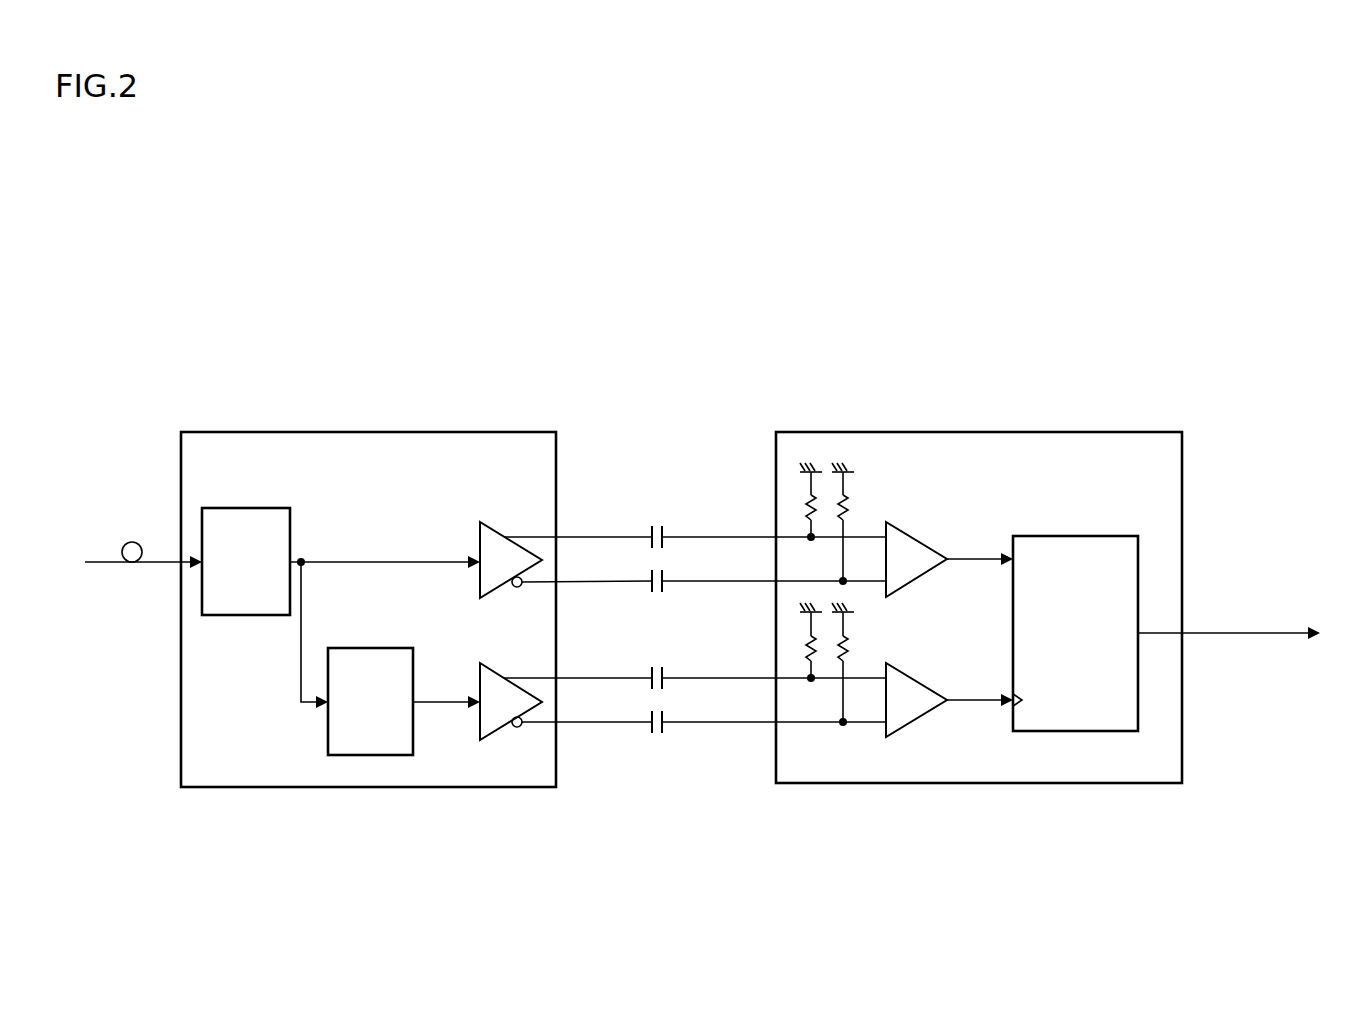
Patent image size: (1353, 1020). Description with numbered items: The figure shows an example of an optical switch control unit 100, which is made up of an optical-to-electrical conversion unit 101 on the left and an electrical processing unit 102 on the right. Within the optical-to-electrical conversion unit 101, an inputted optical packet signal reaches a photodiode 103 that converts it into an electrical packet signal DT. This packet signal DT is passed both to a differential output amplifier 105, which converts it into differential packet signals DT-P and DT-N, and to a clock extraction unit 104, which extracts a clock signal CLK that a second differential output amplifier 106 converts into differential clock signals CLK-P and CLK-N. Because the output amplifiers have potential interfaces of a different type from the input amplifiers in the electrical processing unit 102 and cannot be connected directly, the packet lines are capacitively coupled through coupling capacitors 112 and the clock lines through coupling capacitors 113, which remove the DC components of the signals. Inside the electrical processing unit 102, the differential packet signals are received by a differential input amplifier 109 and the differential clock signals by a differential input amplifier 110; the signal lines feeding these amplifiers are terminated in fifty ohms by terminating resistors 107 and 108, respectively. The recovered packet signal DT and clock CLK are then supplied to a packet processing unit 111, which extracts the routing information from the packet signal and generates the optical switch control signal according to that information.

The optical switch control unit 100 is at (694, 385).
The optical-to-electrical (O/E) conversion unit 101 is at (380, 432).
The electrical processing unit 102 is at (990, 432).
The photodiode (PD) 103 is at (225, 508).
The clock extraction unit 104 is at (375, 648).
The differential output amplifier 105 is at (487, 526).
The differential output amplifier 106 is at (497, 672).
The terminating resistors 107 is at (846, 498).
The terminating resistors 108 is at (846, 641).
The differential input amplifier 109 is at (913, 536).
The differential input amplifier 110 is at (918, 680).
The packet processing unit 111 is at (1085, 536).
The coupling capacitors 112 is at (638, 526).
The coupling capacitors 113 is at (638, 664).